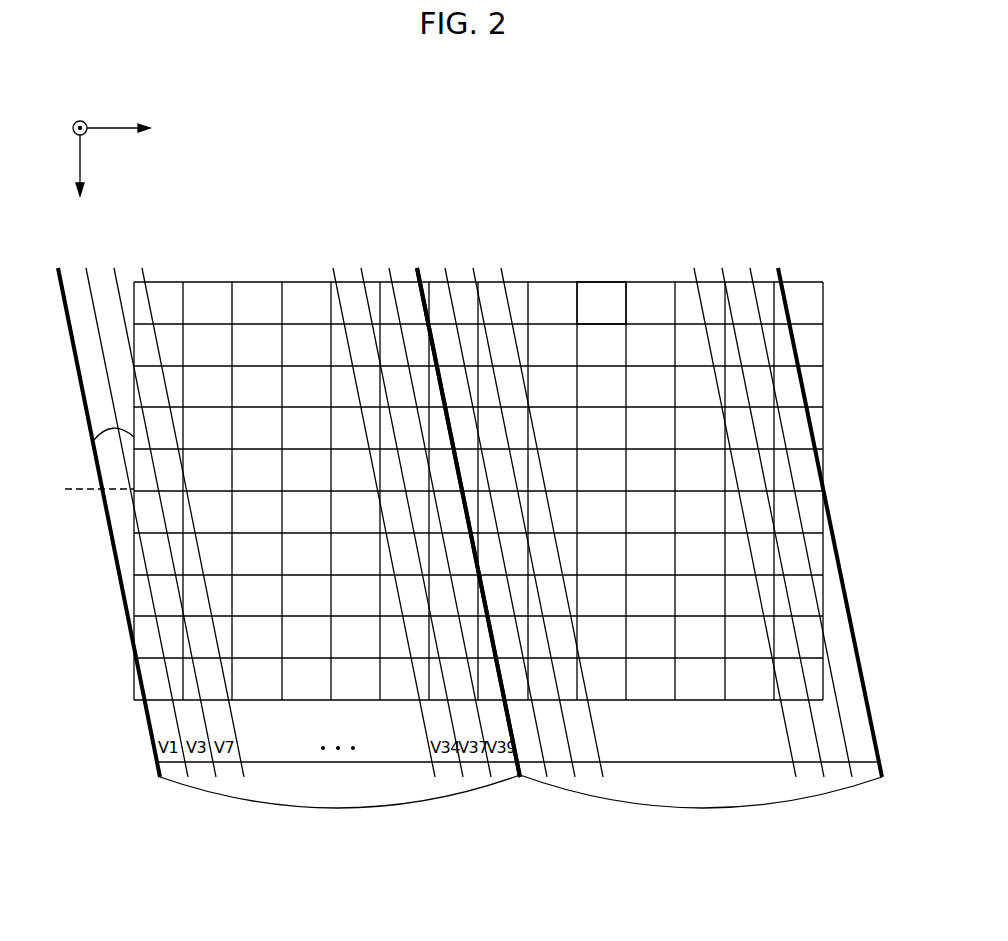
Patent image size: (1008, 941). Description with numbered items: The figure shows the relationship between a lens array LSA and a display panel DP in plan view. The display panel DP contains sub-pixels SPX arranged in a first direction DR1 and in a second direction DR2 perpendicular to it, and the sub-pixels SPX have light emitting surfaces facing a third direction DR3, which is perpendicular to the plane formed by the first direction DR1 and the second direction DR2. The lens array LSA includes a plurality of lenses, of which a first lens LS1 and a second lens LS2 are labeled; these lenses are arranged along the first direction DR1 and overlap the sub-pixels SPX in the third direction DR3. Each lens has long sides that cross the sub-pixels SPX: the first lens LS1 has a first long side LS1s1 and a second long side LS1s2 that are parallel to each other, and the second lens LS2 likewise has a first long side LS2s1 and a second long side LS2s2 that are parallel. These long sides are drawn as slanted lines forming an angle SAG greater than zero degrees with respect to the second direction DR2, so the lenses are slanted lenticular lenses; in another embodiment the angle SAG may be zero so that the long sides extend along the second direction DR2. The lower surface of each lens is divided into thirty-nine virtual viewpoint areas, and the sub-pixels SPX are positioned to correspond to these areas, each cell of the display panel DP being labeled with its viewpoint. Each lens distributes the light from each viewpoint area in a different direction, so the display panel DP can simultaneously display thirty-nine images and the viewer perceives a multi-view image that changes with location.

The first direction DR1 is at (138, 128).
The second direction DR2 is at (80, 180).
The third direction DR3 is at (80, 116).
The display panel DP is at (562, 281).
The sub-pixels SPX is at (616, 288).
The lens array LSA is at (462, 551).
The first lens LS1 is at (281, 544).
The second lens LS2 is at (649, 529).
The first long side of the first lens LS1s1 is at (422, 292).
The second long side of the first lens LS1s2 is at (111, 550).
The first long side of the second lens LS2s1 is at (783, 292).
The second long side of the second lens LS2s2 is at (425, 292).
The angle SAG is at (93, 432).